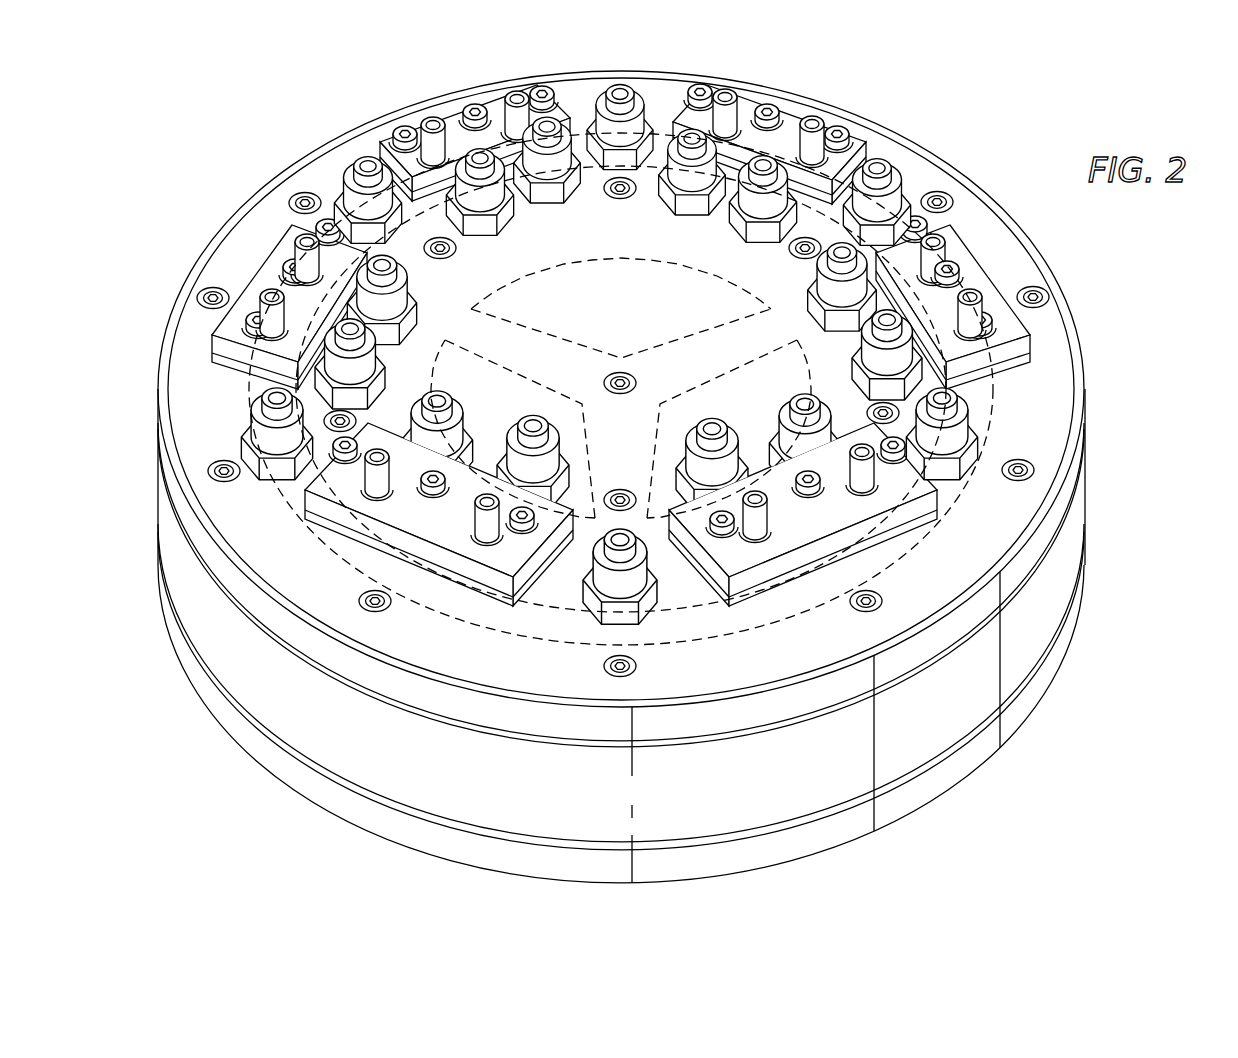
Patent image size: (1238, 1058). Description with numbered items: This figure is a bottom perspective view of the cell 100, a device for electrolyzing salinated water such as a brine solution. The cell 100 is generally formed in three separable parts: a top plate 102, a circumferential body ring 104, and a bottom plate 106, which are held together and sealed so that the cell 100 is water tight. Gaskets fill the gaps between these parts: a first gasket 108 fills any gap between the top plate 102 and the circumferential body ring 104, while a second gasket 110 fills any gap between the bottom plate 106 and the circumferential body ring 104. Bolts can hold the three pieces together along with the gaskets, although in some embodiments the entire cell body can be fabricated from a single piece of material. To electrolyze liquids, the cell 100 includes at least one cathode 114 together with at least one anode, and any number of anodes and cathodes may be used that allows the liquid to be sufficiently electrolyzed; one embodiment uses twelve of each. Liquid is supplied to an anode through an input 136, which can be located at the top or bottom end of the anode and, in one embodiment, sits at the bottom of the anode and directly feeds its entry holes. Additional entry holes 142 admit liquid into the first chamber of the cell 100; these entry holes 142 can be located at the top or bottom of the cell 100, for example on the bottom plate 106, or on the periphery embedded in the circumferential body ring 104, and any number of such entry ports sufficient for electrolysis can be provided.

The cell 100 is at (640, 477).
The top plate 102 is at (960, 770).
The circumferential body ring 104 is at (1075, 522).
The bottom plate 106 is at (1063, 345).
The first gasket 108 is at (1038, 680).
The second gasket 110 is at (240, 605).
The cathode 114 is at (290, 278).
The input 136 is at (395, 272).
The entry holes 142 is at (368, 165).